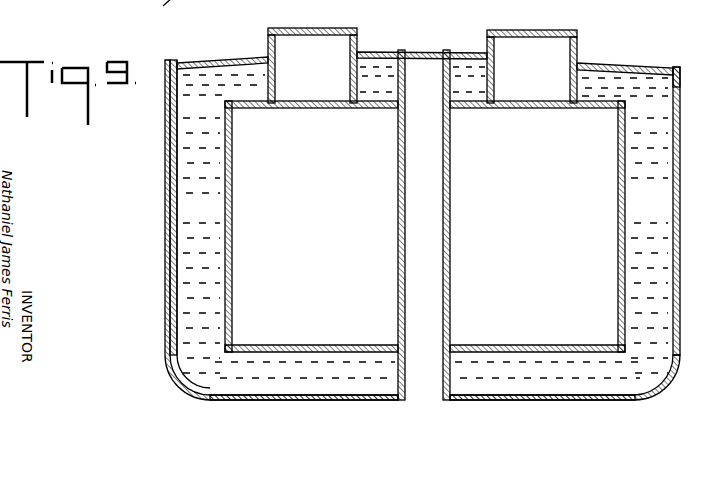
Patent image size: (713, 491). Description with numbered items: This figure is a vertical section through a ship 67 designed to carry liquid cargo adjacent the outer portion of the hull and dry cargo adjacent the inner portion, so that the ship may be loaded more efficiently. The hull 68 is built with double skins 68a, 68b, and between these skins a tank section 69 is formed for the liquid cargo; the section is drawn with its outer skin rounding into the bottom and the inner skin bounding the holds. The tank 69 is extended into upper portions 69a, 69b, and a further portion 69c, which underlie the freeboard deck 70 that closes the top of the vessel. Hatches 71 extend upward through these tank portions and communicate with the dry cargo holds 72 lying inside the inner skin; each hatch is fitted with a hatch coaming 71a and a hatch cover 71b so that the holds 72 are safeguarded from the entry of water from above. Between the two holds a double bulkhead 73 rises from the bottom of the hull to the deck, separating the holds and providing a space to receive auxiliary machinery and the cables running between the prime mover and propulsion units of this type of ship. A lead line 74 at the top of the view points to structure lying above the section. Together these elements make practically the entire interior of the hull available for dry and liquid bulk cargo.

The ship 67 is at (673, 62).
The hull 68 is at (160, 242).
The double skin 68a is at (263, 352).
The double skin 68b is at (265, 400).
The tank section 69 is at (209, 213).
The tank portion 69a is at (224, 84).
The tank portion 69b is at (422, 80).
The liquid in right upper compartment 69c is at (625, 86).
The freeboard deck 70 is at (240, 62).
The hatch 71 is at (445, 52).
The hatch coaming 71a is at (357, 46).
The hatch cover 71b is at (326, 29).
The dry cargo hold 72 is at (320, 213).
The double bulkhead 73 is at (442, 217).
The connecting line 74 is at (157, 9).